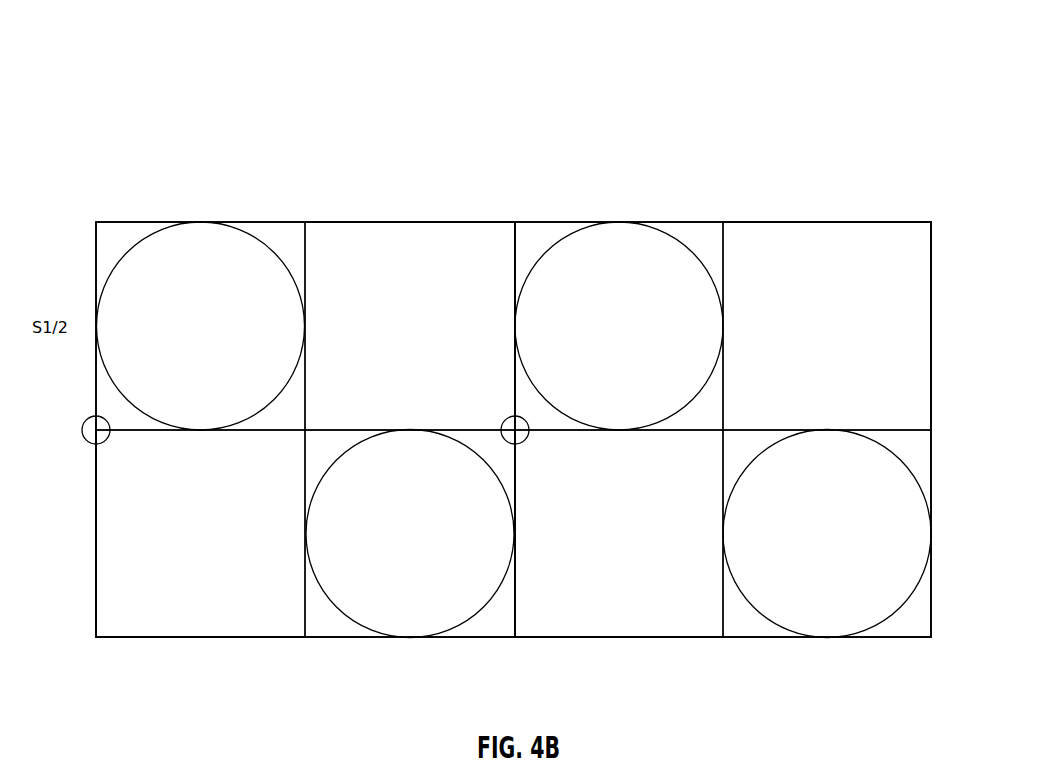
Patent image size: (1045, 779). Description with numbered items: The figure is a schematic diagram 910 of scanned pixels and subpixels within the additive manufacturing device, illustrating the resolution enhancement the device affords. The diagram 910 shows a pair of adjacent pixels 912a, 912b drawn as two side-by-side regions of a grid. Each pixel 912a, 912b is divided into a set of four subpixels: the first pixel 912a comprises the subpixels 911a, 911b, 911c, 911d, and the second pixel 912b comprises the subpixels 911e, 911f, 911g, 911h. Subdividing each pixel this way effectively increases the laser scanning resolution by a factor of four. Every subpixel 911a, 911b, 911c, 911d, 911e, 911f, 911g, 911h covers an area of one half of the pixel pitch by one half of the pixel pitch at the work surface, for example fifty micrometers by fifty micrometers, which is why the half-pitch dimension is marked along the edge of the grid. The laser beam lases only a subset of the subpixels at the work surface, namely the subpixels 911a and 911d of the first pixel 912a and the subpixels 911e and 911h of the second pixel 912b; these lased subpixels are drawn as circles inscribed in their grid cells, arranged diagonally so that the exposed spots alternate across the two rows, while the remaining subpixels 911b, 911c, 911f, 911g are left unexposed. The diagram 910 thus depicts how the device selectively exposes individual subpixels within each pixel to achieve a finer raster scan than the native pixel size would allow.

The diagram 910 is at (523, 363).
The subpixel 911a is at (192, 272).
The subpixel 911b is at (365, 280).
The subpixel 911c is at (260, 577).
The subpixel 911d is at (408, 450).
The subpixel 911e is at (621, 258).
The subpixel 911f is at (788, 293).
The subpixel 911g is at (658, 568).
The subpixel 911h is at (814, 490).
The pixel 912a is at (305, 217).
The pixel 912b is at (820, 217).